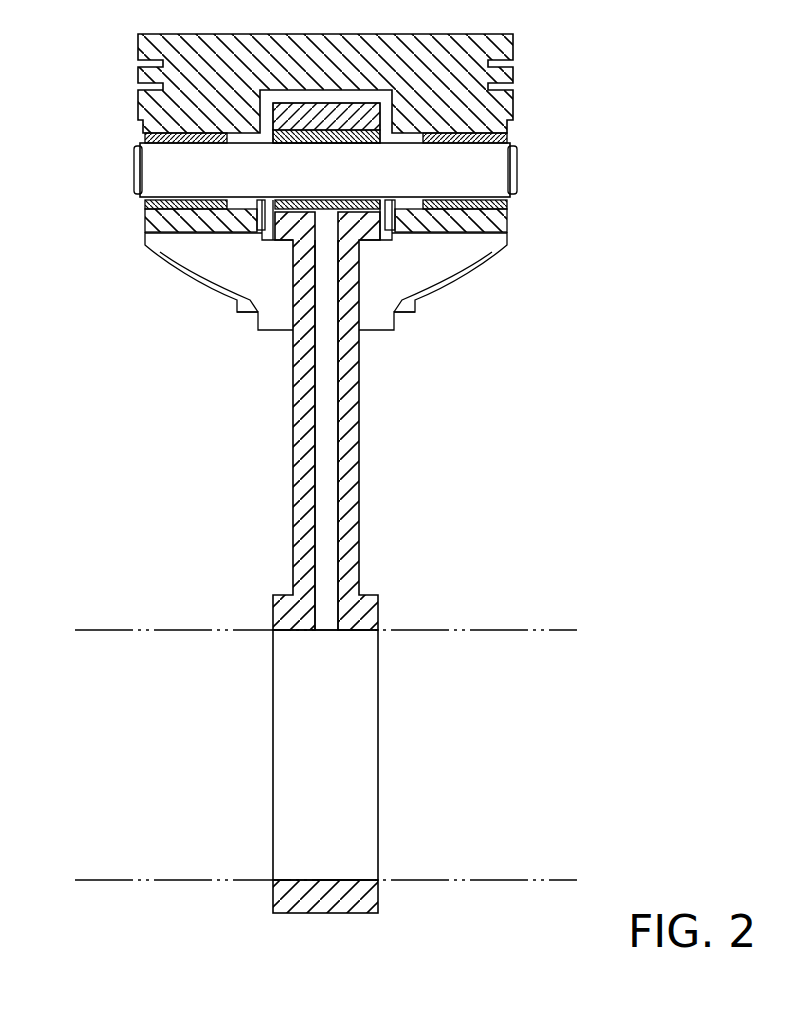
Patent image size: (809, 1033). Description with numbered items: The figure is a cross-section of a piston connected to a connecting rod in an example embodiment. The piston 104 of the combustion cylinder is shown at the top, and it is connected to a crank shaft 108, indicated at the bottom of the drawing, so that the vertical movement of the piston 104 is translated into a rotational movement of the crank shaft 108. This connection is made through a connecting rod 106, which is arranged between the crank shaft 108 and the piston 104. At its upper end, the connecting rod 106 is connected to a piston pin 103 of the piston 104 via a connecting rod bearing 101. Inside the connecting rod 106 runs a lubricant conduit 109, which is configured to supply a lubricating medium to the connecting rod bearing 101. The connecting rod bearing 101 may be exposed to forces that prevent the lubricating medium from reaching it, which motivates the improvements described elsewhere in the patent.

The piston 104 is at (548, 89).
The piston pin 103 is at (520, 170).
The connecting rod bearing 101 is at (383, 212).
The connecting rod 106 is at (358, 460).
The lubricant conduit 109 is at (323, 423).
The crank shaft 108 is at (478, 630).